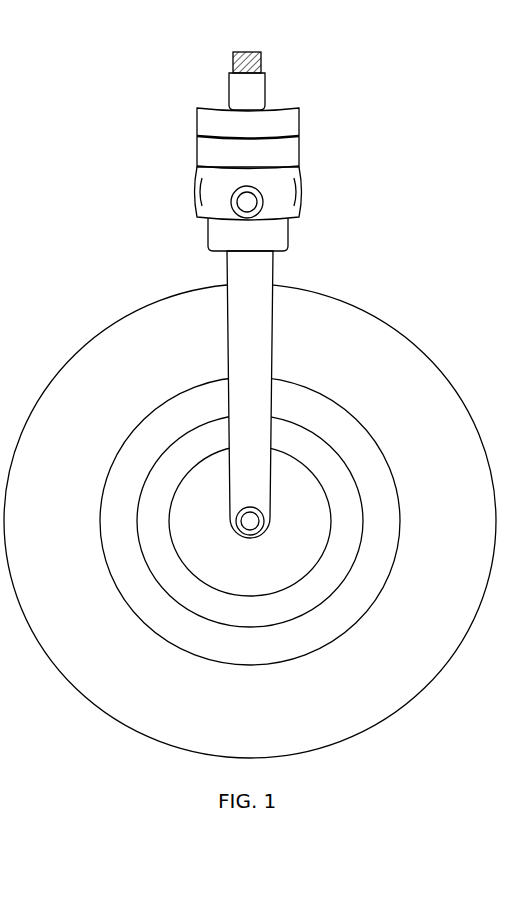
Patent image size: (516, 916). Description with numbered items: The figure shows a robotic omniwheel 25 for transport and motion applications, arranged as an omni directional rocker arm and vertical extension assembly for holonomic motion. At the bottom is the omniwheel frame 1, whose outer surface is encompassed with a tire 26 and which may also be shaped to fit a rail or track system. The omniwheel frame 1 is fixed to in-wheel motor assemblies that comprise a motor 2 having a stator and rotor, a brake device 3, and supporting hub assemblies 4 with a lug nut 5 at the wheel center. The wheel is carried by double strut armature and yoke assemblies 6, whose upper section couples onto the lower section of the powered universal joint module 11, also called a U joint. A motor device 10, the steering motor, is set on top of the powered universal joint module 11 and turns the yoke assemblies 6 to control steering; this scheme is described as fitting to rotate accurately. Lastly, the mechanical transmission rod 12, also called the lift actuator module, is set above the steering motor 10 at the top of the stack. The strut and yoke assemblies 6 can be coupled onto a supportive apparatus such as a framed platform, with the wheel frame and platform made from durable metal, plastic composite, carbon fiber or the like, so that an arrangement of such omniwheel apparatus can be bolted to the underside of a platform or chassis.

The omniwheel frame 1 is at (250, 521).
The tire 26 is at (102, 329).
The motor 2 is at (136, 428).
The brake device 3 is at (318, 557).
The hub assemblies 4 is at (268, 628).
The lug nut 5 is at (238, 522).
The double strut armature and yoke assemblies 6 is at (208, 250).
The motor device 10 is at (202, 154).
The powered universal joint module 11 is at (200, 205).
The mechanical transmission rod 12 is at (222, 107).
The robotic omniwheel 25 is at (193, 116).